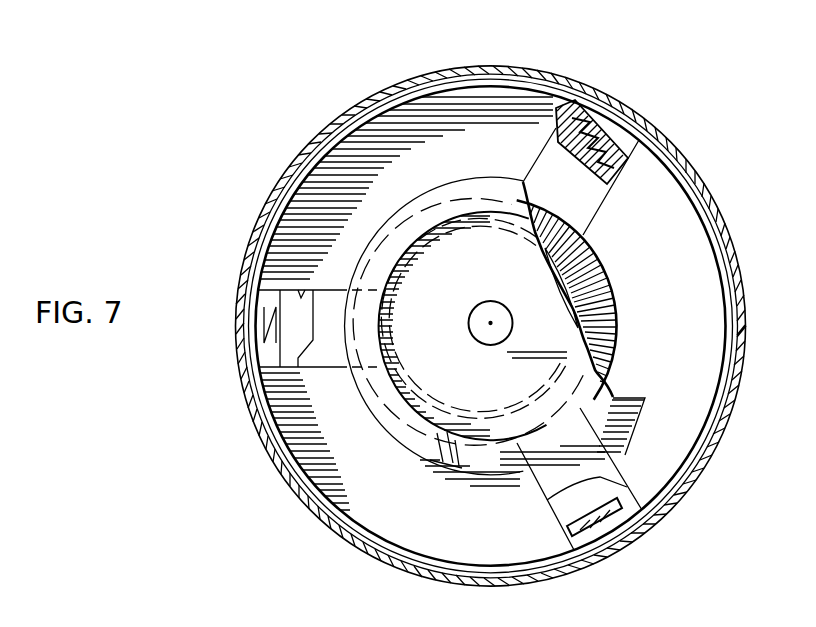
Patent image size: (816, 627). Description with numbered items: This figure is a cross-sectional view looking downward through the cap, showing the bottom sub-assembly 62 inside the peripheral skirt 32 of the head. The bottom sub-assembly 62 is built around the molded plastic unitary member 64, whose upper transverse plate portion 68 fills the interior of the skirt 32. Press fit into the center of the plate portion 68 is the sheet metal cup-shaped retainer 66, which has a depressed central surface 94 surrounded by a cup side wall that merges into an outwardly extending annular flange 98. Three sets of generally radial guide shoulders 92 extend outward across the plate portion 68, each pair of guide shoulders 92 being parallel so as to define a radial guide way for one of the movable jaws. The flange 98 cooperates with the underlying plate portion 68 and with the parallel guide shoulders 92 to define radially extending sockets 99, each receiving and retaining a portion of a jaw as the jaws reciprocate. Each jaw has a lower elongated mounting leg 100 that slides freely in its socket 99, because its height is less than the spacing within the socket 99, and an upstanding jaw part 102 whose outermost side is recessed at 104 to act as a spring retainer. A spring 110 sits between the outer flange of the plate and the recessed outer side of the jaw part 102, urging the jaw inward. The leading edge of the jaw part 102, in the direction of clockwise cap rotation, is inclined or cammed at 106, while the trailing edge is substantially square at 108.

The peripheral skirt 32 is at (718, 178).
The bottom sub-assembly 62 is at (543, 94).
The unitary member 64 is at (690, 182).
The cup-shaped retainer 66 is at (416, 275).
The upper transverse plate portion 68 is at (650, 378).
The radial guide shoulders 92 is at (548, 162).
The depressed central surface 94 is at (528, 340).
The annular flange 98 is at (458, 188).
The radially extending sockets 99 is at (265, 283).
The mounting leg 100 is at (596, 200).
The jaw part 102 is at (580, 166).
The recess 104 is at (598, 118).
The cammed leading edge 106 is at (556, 137).
The square trailing edge 108 is at (634, 212).
The spring 110 is at (612, 160).